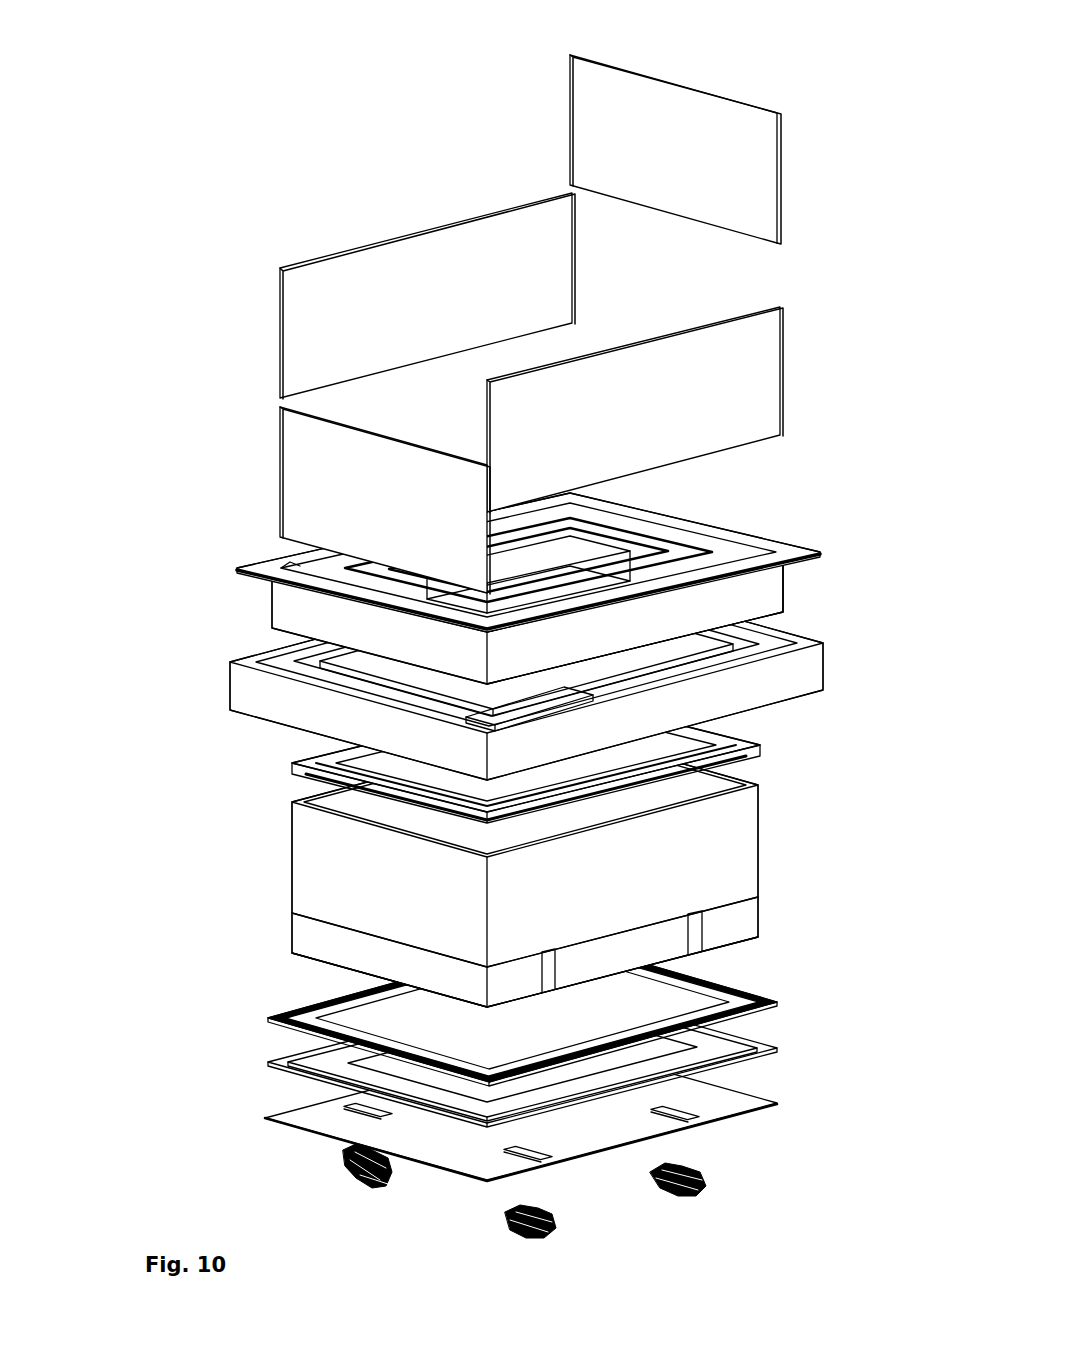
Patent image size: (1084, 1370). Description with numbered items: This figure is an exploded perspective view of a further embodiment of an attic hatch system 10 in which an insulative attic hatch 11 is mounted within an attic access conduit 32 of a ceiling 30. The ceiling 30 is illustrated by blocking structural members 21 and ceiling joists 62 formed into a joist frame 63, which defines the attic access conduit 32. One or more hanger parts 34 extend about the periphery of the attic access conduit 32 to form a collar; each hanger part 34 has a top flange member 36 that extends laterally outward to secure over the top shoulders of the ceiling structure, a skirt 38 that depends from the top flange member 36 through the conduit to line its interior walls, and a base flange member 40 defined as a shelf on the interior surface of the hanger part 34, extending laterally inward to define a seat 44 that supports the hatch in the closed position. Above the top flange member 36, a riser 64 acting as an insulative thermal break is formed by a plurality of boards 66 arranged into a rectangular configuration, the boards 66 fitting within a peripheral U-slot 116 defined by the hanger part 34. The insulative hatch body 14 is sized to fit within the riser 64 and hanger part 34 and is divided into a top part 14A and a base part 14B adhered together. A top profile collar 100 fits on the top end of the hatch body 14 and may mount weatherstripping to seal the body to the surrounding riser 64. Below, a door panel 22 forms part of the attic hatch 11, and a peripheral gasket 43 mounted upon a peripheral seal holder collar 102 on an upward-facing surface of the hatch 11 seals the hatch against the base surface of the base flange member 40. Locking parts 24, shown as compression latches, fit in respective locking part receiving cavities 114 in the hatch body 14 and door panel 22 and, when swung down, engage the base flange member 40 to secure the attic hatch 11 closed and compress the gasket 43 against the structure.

The attic hatch system 10 is at (178, 172).
The attic hatch 11 is at (287, 104).
The insulative hatch body 14 is at (580, 868).
The top part of hatch body 14A is at (580, 910).
The base part of hatch body 14B is at (742, 921).
The structural members 21 is at (498, 707).
The door panel 22 is at (432, 1168).
The locking parts 24 is at (362, 1184).
The ceiling 30 is at (524, 707).
The attic access conduit 32 is at (292, 656).
The hanger parts 34 is at (772, 588).
The top flange member 36 is at (536, 549).
The skirt 38 is at (550, 597).
The base flange member 40 is at (600, 512).
The seat 44 is at (675, 529).
The gasket 43 is at (778, 1001).
The ceiling joists 62 is at (574, 781).
The joist frame 63 is at (318, 716).
The riser 64 is at (206, 388).
The boards 66 is at (760, 190).
The top profile collar 100 is at (761, 746).
The peripheral seal holder collar 102 is at (777, 1049).
The locking part receiving cavities 114 is at (543, 957).
The peripheral U-slot 116 is at (283, 559).